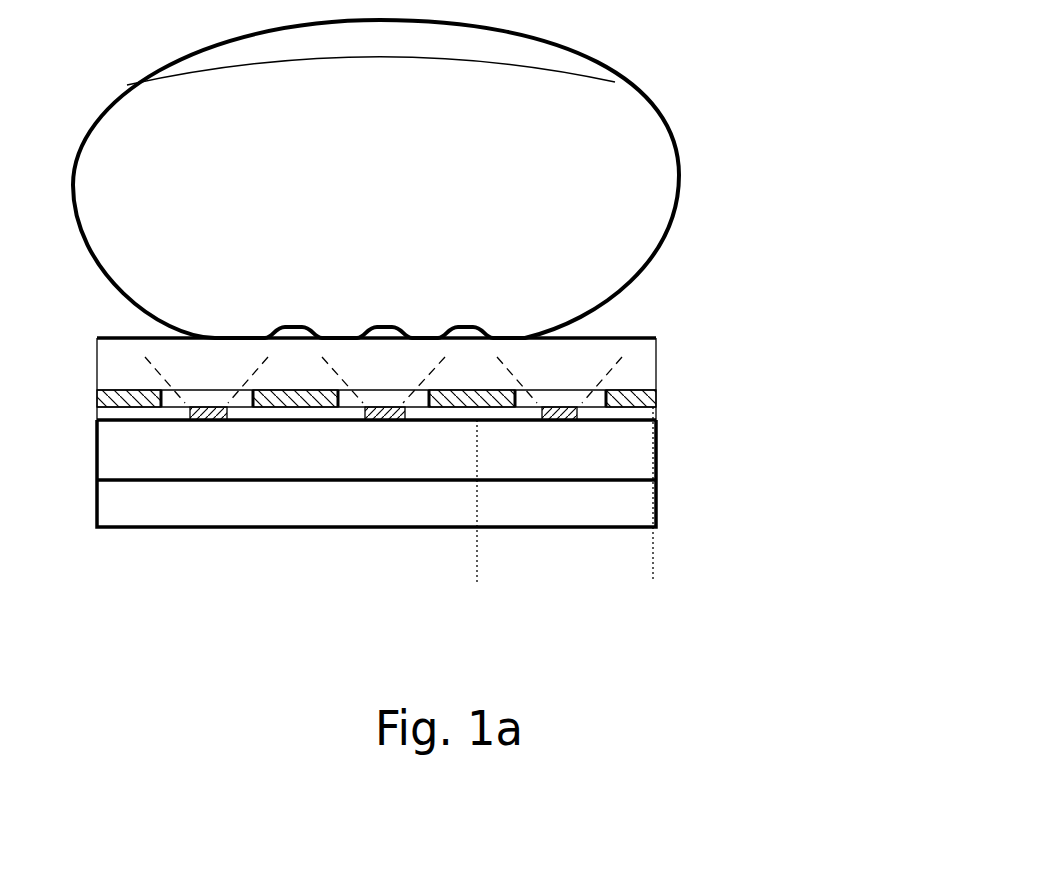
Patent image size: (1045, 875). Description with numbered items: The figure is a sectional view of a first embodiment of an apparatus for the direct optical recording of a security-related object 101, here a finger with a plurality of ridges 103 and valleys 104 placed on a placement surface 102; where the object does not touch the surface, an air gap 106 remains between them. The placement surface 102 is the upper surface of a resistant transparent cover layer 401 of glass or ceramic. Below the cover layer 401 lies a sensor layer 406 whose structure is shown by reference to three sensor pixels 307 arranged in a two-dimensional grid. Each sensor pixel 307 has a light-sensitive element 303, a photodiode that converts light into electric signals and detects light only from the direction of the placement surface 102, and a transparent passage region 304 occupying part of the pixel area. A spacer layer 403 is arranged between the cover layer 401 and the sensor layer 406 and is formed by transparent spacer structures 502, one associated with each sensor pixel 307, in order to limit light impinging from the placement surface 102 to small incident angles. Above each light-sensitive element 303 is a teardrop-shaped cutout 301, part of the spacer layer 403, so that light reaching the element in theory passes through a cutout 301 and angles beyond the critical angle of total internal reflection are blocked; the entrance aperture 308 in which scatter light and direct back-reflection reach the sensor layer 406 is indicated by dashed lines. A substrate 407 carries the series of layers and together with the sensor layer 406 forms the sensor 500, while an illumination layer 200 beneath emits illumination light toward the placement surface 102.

The security-related object 101 is at (679, 173).
The placement surface 102 is at (612, 337).
The ridges 103 is at (342, 337).
The valleys 104 is at (458, 328).
The air gap 106 is at (475, 335).
The illumination layer 200 is at (645, 505).
The cutout 301 is at (190, 398).
The light-sensitive element 303 is at (563, 415).
The transparent passage region 304 is at (493, 417).
The sensor pixel 307 is at (477, 582).
The entrance aperture 308 is at (180, 405).
The cover layer 401 is at (647, 365).
The spacer layer 403 is at (647, 400).
The sensor layer 406 is at (645, 413).
The substrate 407 is at (645, 452).
The sensor 500 is at (858, 423).
The spacer structures 502 is at (305, 398).